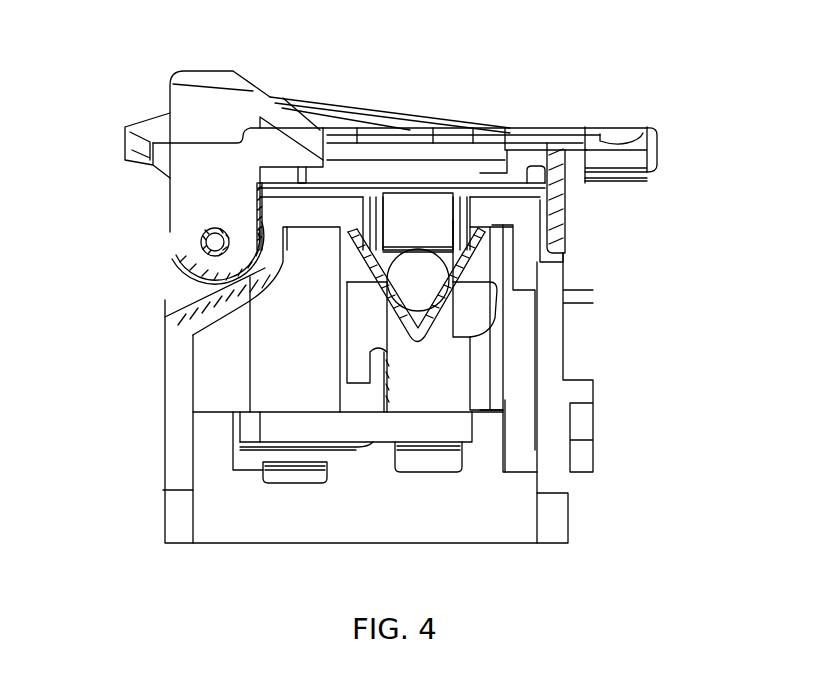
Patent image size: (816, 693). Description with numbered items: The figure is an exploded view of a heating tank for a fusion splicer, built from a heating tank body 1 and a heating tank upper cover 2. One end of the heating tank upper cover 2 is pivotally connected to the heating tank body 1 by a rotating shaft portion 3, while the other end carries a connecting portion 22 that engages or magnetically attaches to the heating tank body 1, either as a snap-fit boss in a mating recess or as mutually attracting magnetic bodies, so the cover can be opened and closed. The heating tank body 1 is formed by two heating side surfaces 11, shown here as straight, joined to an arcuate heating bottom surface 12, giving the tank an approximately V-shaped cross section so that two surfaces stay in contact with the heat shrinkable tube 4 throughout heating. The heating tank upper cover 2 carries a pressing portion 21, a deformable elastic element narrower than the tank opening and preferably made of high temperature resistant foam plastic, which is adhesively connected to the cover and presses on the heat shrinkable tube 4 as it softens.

The heating tank body 1 is at (151, 352).
The heating tank upper cover 2 is at (256, 95).
The rotating shaft portion 3 is at (194, 238).
The heat shrinkable tube 4 is at (436, 280).
The heating side surface 11 is at (372, 237).
The heating bottom surface 12 is at (444, 334).
The pressing portion 21 is at (426, 211).
The connecting portion 22 is at (565, 246).